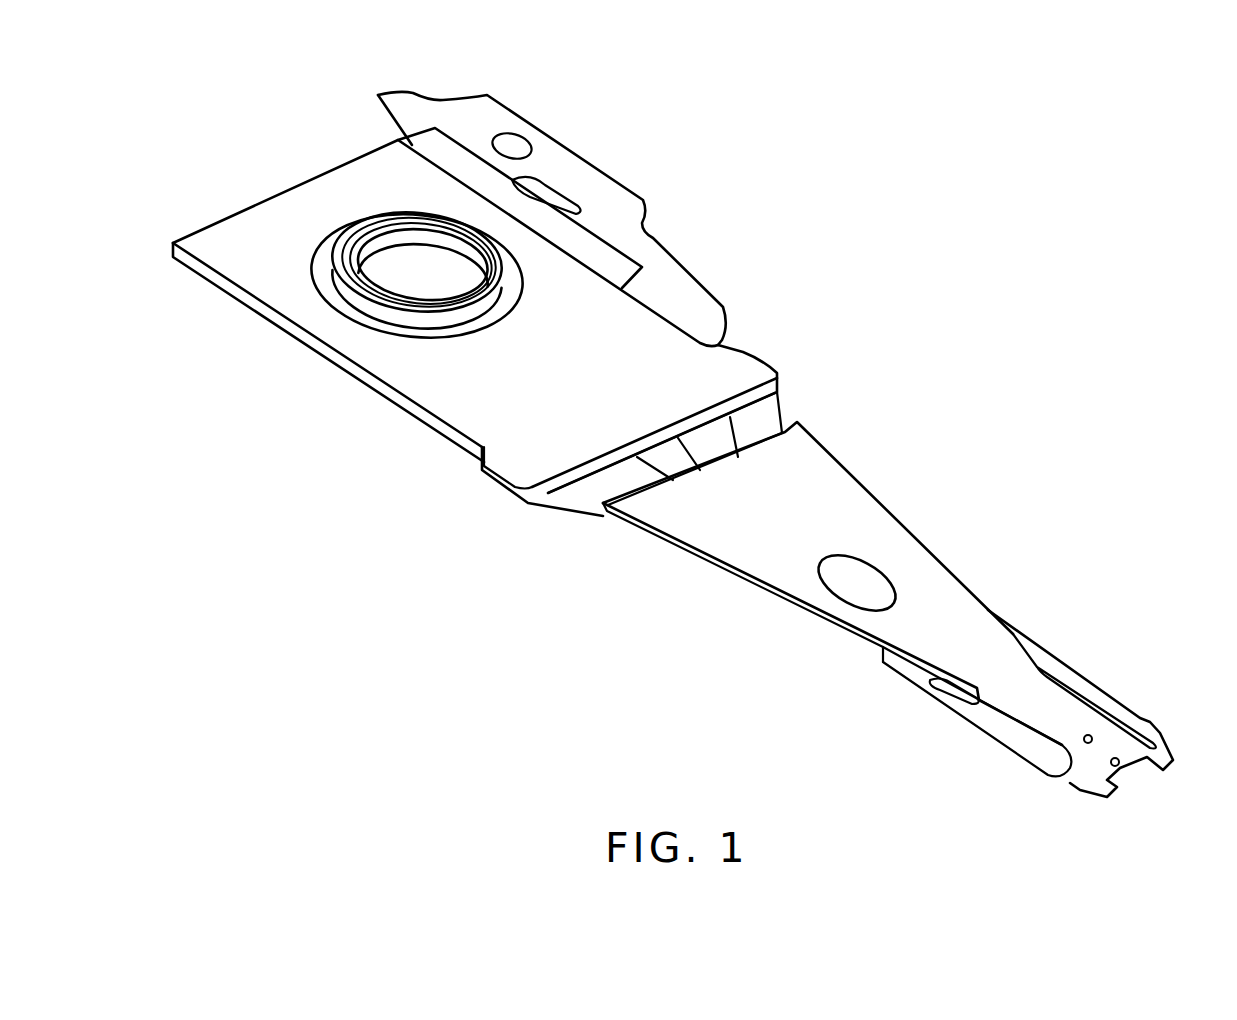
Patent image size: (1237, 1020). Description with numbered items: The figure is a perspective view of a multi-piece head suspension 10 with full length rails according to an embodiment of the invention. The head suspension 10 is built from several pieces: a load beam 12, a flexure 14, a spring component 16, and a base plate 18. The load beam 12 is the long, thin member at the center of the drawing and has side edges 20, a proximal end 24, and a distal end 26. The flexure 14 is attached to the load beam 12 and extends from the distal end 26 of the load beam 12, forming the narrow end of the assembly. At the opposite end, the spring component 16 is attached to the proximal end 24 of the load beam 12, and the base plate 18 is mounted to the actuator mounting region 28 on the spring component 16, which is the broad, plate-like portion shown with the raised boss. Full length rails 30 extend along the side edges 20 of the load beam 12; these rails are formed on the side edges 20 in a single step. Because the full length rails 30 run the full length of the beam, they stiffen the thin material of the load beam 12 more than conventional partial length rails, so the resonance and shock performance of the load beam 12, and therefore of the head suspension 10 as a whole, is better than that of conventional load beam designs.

The head suspension 10 is at (1023, 222).
The load beam 12 is at (693, 523).
The flexure 14 is at (1140, 718).
The spring component 16 is at (772, 413).
The base plate 18 is at (618, 330).
The side edges 20 is at (929, 545).
The proximal end 24 is at (630, 480).
The distal end 26 is at (1057, 737).
The actuator mounting region 28 is at (557, 152).
The full length rails 30 is at (982, 600).